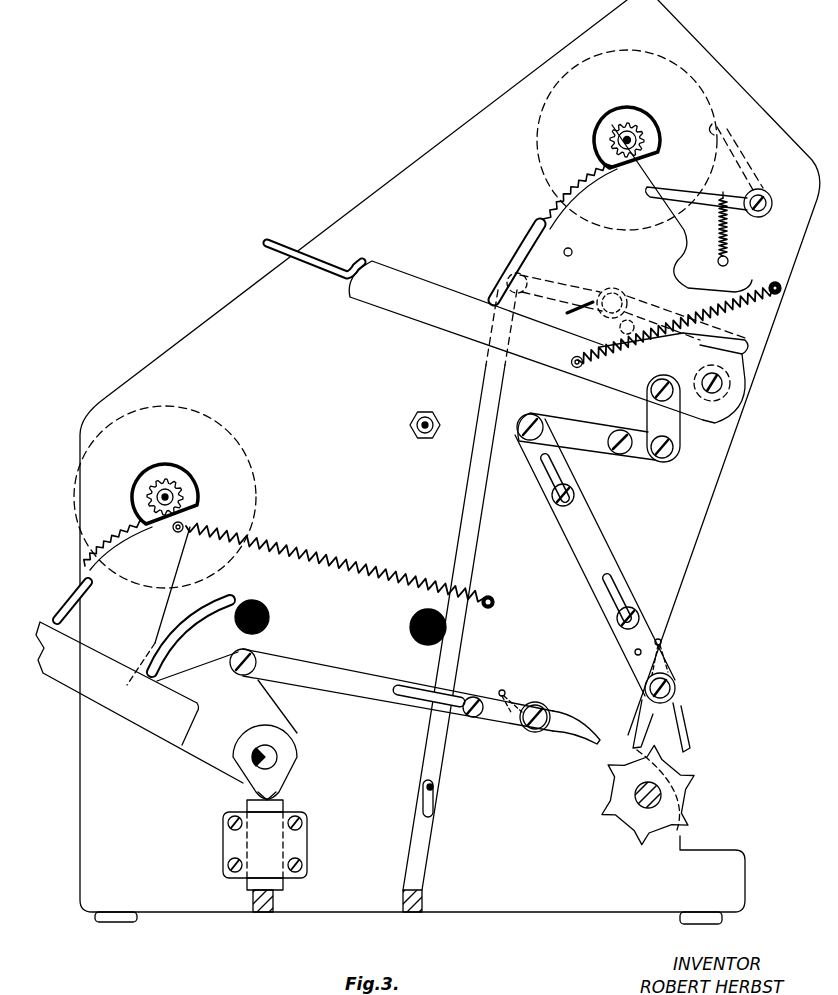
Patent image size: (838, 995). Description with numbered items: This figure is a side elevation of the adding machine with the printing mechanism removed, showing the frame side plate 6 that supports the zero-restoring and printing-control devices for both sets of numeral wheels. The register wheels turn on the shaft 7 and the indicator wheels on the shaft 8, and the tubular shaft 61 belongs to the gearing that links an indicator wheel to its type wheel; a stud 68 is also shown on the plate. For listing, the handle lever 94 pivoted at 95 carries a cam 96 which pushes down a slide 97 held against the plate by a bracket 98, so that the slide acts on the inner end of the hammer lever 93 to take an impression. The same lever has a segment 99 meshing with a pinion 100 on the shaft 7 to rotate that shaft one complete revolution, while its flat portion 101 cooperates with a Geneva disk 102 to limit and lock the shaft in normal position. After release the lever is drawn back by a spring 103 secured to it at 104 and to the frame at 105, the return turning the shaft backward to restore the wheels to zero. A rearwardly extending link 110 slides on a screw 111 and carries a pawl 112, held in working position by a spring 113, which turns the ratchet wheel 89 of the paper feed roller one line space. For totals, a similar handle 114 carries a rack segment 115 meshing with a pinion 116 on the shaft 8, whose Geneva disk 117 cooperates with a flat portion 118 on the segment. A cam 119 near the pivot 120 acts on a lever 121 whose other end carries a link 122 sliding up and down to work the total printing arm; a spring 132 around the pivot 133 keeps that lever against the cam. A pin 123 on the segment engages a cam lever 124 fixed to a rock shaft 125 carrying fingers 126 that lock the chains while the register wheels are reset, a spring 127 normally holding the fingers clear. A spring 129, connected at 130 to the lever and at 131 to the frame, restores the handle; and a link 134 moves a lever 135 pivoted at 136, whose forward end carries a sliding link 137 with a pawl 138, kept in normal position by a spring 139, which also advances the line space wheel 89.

The side plate 6 is at (700, 502).
The shaft 7 is at (180, 496).
The shaft 8 is at (644, 136).
The tubular shaft 61 is at (268, 614).
The stud 68 is at (420, 618).
The ratchet wheel 89 is at (682, 776).
The hammer lever 93 is at (424, 900).
The handle lever 94 is at (70, 677).
The pivot 95 is at (250, 760).
The cam 96 is at (255, 800).
The slide 97 is at (285, 806).
The bracket 98 is at (308, 843).
The segment 99 is at (80, 562).
The pinion 100 is at (186, 480).
The flat portion 101 is at (66, 592).
The Geneva disk 102 is at (146, 476).
The spring 103 is at (310, 562).
The spring attachment point 104 is at (185, 527).
The spring attachment point 105 is at (494, 600).
The link 110 is at (330, 665).
The screw 111 is at (482, 700).
The pawl 112 is at (580, 726).
The spring 113 is at (565, 707).
The handle 114 is at (385, 262).
The rack segment 115 is at (548, 212).
The pinion 116 is at (629, 124).
The Geneva disk 117 is at (611, 122).
The flat portion 118 is at (530, 238).
The cam 119 is at (745, 365).
The pivot 120 is at (723, 386).
The lever 121 is at (752, 341).
The link 122 is at (492, 388).
The pin 123 is at (573, 252).
The cam lever 124 is at (677, 198).
The rock shaft 125 is at (772, 200).
The fingers 126 is at (743, 153).
The spring 127 is at (735, 230).
The spring 129 is at (731, 292).
The spring connection 130 is at (572, 366).
The spring connection 131 is at (781, 289).
The spring 132 is at (593, 302).
The pivot 133 is at (627, 300).
The link 134 is at (672, 420).
The lever 135 is at (590, 447).
The pivot 136 is at (618, 432).
The sliding link 137 is at (600, 546).
The pawl 138 is at (690, 697).
The spring 139 is at (663, 642).